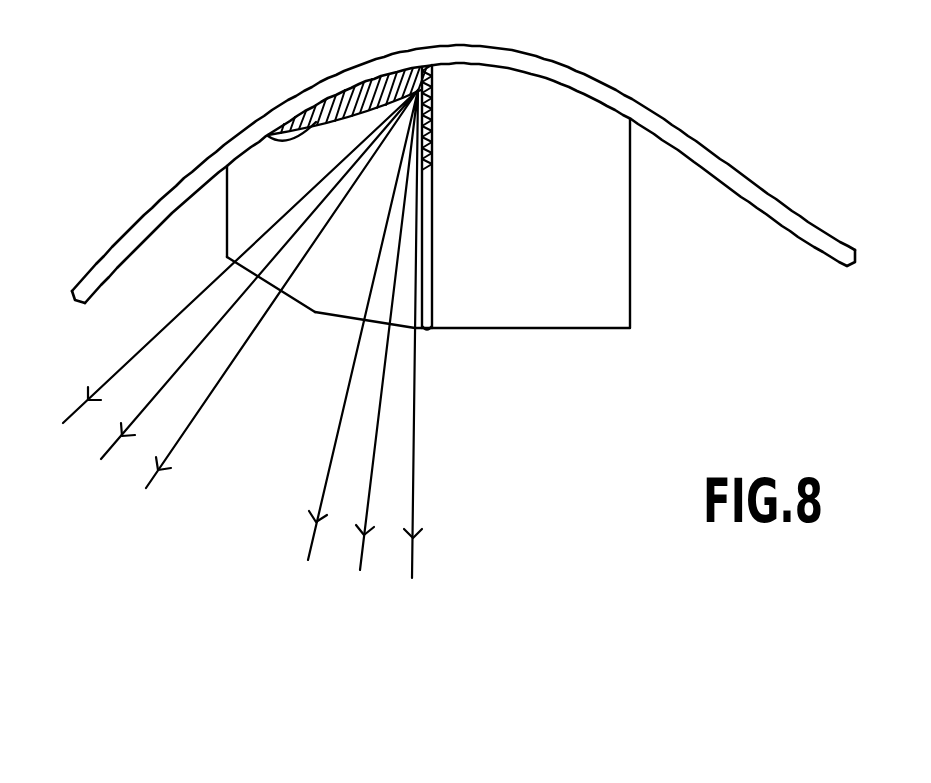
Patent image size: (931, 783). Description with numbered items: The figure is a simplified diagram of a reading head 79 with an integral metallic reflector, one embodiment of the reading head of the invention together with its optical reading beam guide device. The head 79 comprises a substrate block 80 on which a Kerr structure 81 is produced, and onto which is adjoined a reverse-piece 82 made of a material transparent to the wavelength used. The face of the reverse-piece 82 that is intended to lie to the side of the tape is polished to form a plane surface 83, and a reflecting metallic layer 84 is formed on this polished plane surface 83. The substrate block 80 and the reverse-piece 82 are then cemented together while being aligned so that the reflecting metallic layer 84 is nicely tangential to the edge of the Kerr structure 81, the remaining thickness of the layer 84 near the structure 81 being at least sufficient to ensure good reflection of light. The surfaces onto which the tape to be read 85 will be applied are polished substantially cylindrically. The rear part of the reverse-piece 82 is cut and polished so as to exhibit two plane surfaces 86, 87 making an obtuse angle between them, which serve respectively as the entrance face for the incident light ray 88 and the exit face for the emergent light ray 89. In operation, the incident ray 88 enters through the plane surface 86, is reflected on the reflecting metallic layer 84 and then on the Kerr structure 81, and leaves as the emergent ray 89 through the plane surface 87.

The head 79 is at (459, 296).
The substrate block 80 is at (612, 298).
The Kerr structure 81 is at (433, 105).
The reverse-piece 82 is at (245, 210).
The plane surface 83 is at (267, 132).
The reflecting metallic layer 84 is at (338, 98).
The tape to be read 85 is at (713, 168).
The plane surface 86 is at (337, 317).
The plane surface 87 is at (289, 300).
The incident light ray 88 is at (370, 498).
The emergent light ray 89 is at (193, 422).